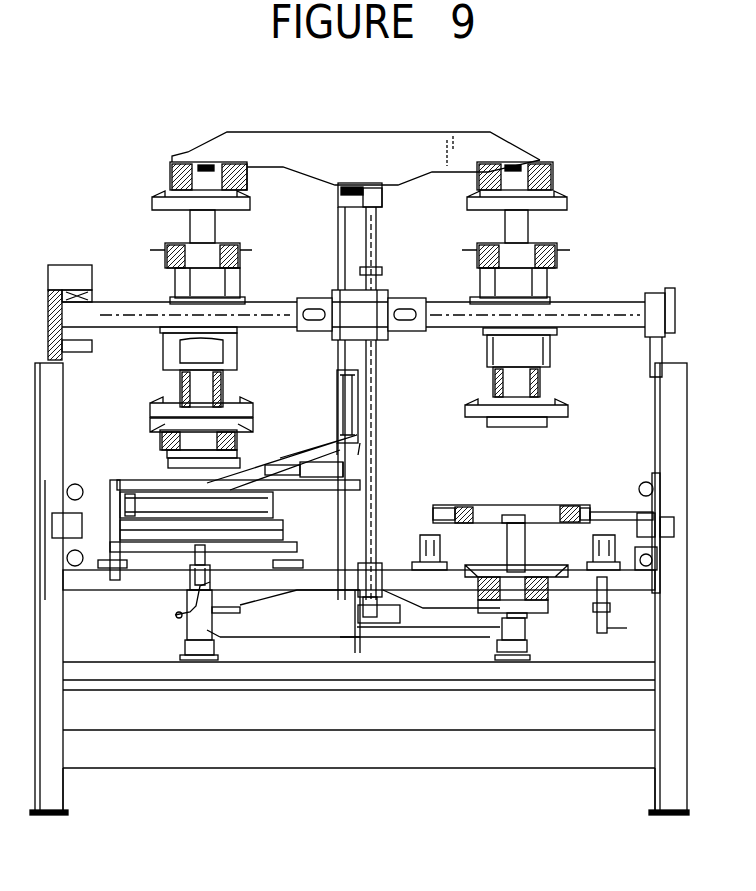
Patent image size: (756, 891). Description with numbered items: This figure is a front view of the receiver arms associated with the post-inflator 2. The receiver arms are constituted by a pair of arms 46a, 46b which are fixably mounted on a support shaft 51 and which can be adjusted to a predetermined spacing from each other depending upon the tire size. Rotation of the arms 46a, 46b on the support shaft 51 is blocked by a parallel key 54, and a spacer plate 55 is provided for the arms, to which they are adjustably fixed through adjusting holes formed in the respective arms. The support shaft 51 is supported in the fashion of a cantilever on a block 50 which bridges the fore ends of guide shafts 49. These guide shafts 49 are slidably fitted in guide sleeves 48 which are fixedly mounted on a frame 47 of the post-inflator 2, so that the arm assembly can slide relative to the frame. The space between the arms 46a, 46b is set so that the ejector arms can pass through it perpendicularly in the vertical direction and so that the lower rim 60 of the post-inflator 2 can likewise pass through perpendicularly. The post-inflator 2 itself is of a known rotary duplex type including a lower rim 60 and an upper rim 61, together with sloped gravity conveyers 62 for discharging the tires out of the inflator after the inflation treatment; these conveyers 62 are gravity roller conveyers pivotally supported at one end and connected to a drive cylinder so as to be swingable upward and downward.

The post-inflator 2 is at (543, 160).
The lower rim 60 is at (563, 205).
The upper rim 61 is at (558, 250).
The frame 47 is at (672, 421).
The guide sleeves 48 is at (641, 485).
The guide shafts 49 is at (637, 490).
The support shaft 51 is at (443, 501).
The spacer plate 55 is at (513, 501).
The parallel key 54 is at (598, 502).
The receiver arm 46a is at (465, 524).
The receiver arm 46b is at (567, 525).
The block 50 is at (613, 598).
The sloped gravity conveyers 62 is at (137, 478).